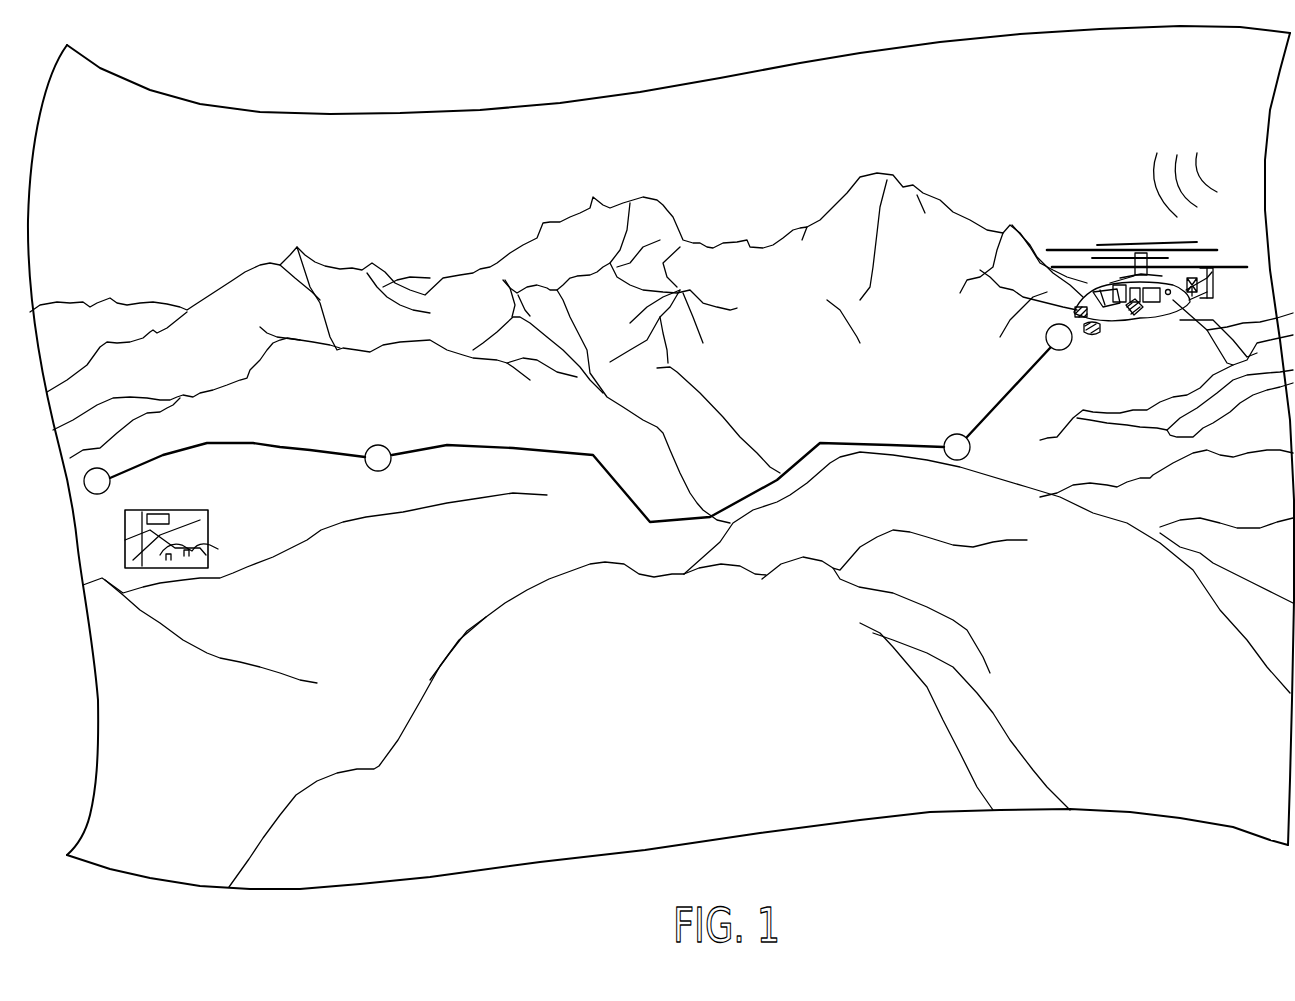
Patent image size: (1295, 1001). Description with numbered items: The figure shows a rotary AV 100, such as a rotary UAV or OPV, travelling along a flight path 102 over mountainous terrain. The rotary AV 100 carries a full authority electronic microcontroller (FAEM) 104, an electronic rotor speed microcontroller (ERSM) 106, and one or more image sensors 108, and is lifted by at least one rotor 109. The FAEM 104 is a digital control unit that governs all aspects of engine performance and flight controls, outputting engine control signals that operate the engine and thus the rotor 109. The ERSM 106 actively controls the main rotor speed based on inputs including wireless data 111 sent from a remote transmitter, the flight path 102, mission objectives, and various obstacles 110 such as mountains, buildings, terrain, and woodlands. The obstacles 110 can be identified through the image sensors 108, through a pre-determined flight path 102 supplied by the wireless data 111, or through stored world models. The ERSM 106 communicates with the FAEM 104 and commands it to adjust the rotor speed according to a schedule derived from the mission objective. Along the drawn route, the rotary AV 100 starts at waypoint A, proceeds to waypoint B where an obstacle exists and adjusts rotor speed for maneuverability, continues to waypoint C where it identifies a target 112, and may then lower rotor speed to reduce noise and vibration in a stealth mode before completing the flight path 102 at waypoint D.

The rotary AV 100 is at (1126, 250).
The flight path 102 is at (578, 423).
The full authority electronic microcontroller (FAEM) 104 is at (1126, 291).
The electronic rotor speed microcontroller (ERSM) 106 is at (1150, 340).
The image sensors 108 is at (1100, 355).
The rotor 109 is at (1147, 231).
The obstacles 110 is at (513, 590).
The wireless data 111 is at (1157, 230).
The target 112 is at (199, 530).